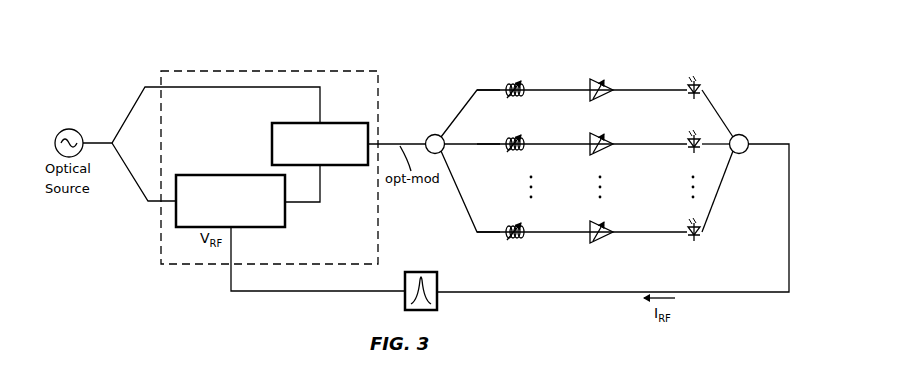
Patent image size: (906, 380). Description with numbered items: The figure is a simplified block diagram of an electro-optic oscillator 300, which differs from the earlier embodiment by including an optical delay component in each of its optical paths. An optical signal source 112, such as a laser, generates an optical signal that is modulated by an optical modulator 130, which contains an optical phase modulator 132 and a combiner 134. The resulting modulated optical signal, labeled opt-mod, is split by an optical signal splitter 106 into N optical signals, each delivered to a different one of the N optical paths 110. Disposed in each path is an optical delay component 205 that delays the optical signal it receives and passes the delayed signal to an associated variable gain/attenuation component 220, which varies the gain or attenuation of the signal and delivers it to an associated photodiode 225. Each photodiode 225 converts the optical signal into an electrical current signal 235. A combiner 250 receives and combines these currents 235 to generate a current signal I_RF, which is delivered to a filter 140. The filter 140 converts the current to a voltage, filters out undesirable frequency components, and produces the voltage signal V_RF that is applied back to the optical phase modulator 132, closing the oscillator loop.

The electro-optic oscillator 300 is at (752, 40).
The optical signal source 112 is at (66, 129).
The optical modulator 130 is at (260, 70).
The optical phase modulator 132 is at (232, 175).
The combiner 134 is at (272, 140).
The optical signal splitter 106 is at (434, 134).
The optical paths 110 is at (462, 108).
The optical delay component 205 is at (525, 80).
The variable gain/attenuation component 220 is at (605, 80).
The photodiode 225 is at (692, 80).
The electrical current signal 235 is at (709, 100).
The combiner 250 is at (738, 134).
The filter 140 is at (430, 272).